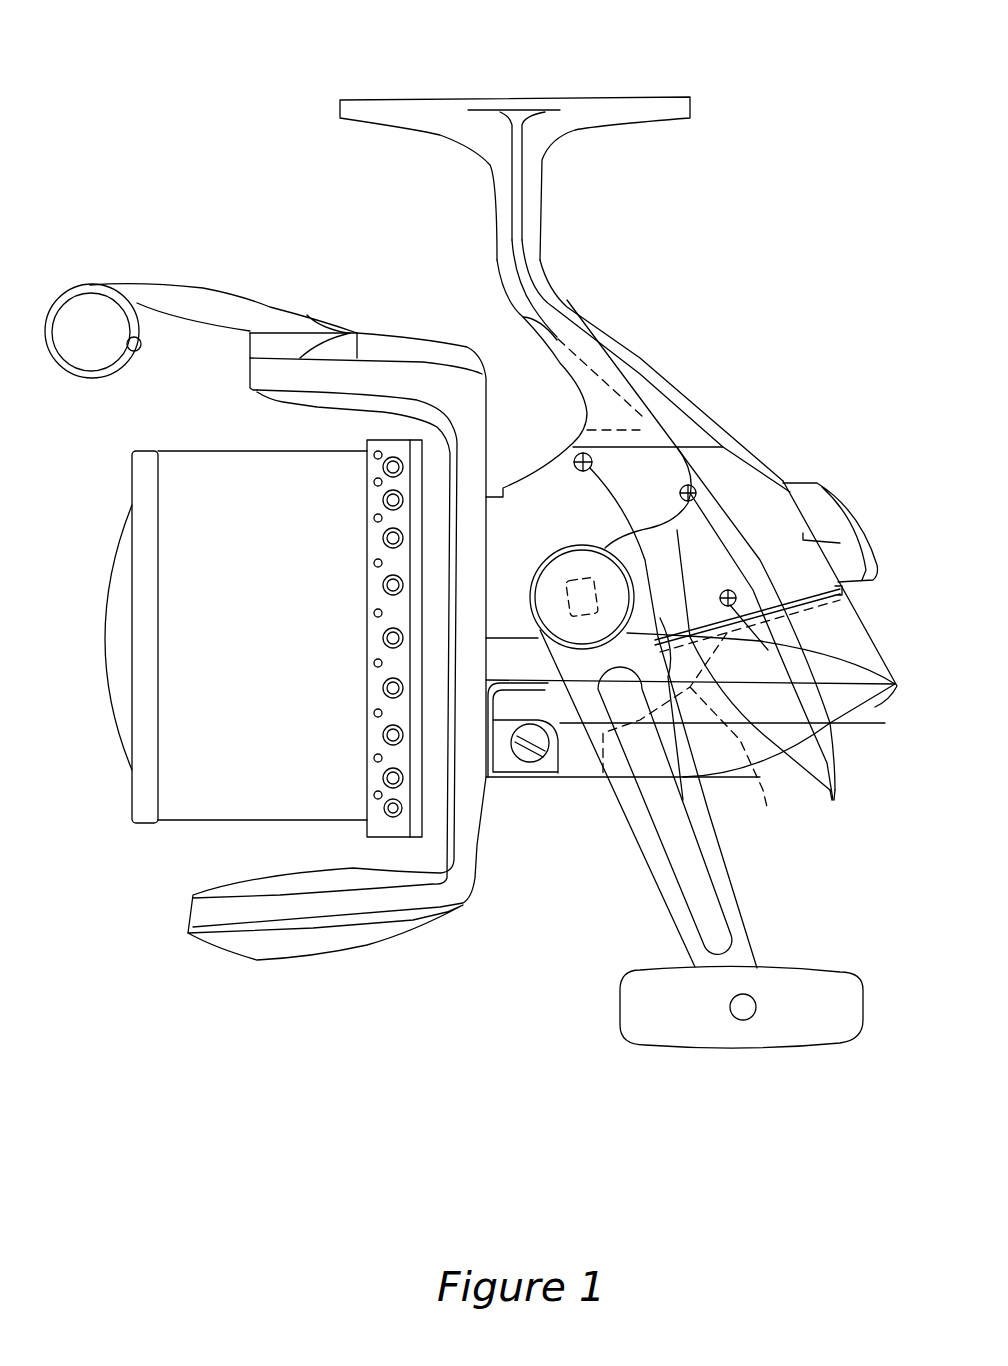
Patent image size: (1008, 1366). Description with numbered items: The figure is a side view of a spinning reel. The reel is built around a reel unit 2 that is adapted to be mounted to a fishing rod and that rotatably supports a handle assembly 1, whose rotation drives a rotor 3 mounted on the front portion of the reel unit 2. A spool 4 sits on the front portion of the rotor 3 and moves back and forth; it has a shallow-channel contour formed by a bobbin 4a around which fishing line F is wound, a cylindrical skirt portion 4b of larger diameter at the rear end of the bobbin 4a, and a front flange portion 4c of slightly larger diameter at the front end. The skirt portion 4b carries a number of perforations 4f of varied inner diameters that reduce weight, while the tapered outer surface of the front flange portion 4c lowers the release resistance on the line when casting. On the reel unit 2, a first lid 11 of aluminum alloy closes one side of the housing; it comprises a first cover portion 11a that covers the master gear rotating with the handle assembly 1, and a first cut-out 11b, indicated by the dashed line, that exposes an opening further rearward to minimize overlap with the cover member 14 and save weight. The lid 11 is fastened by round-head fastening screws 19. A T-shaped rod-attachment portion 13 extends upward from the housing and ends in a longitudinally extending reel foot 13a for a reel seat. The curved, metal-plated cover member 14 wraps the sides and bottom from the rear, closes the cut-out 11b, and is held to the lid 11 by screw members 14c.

The handle assembly 1 is at (718, 884).
The reel unit 2 is at (683, 395).
The rotor 3 is at (433, 922).
The spool 4 is at (263, 700).
The bobbin 4a is at (236, 476).
The skirt portion 4b is at (397, 438).
The front flange portion 4c is at (142, 460).
The perforations 4f is at (392, 832).
The first lid 11 is at (682, 687).
The first cover portion 11a is at (620, 813).
The first cut-out 11b is at (775, 812).
The rod-attachment portion 13 is at (590, 343).
The reel foot 13a is at (590, 113).
The cover member 14 is at (848, 637).
The screw members 14c is at (525, 752).
The fastening screws 19 is at (837, 810).
The fishing line F is at (287, 357).